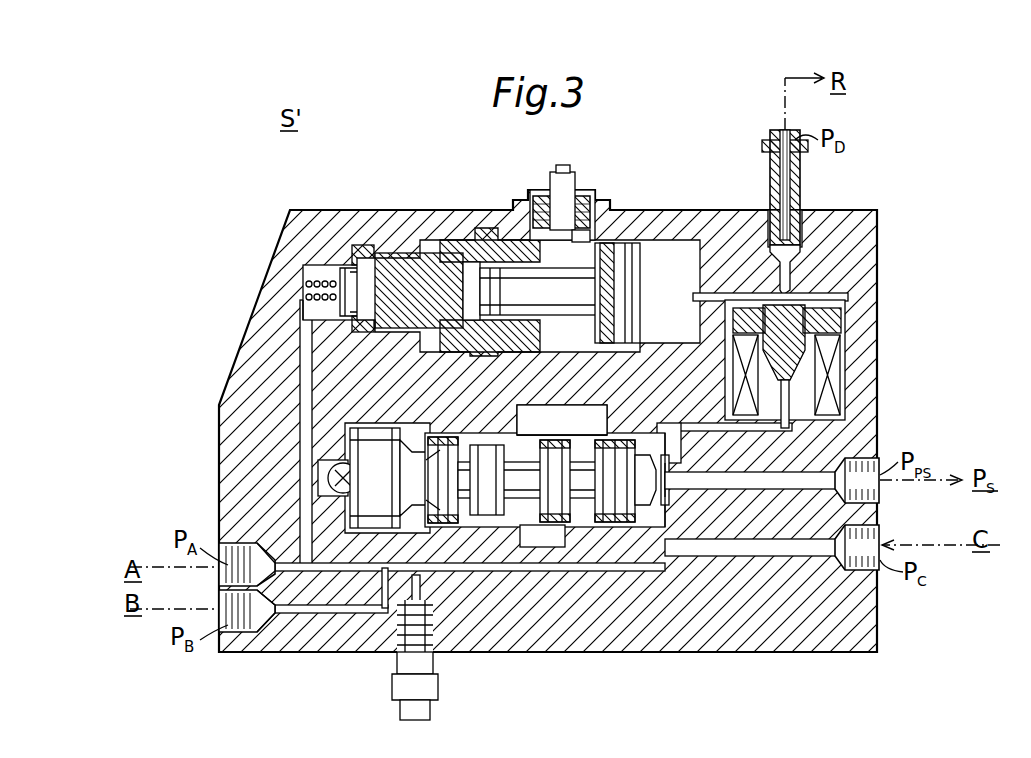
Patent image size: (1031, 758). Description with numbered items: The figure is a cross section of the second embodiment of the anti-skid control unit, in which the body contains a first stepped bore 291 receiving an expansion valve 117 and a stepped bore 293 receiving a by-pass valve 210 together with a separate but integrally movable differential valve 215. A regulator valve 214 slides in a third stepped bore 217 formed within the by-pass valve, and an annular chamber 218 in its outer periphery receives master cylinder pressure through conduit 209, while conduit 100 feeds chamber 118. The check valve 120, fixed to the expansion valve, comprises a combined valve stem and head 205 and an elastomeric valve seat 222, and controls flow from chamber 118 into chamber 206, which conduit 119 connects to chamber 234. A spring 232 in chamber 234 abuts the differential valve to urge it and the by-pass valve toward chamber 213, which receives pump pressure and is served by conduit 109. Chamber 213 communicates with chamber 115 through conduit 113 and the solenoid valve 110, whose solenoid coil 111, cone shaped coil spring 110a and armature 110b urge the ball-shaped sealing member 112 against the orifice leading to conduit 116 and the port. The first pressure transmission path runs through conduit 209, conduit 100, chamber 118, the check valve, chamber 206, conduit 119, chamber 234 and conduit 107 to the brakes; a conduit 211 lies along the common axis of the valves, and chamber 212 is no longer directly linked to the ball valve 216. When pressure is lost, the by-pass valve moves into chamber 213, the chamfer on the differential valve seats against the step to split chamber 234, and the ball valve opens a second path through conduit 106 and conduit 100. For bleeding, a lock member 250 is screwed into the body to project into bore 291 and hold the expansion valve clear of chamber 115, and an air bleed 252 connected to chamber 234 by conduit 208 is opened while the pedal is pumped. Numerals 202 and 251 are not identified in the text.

The conduit 100 is at (345, 352).
The conduit 106 is at (355, 478).
The conduit 107 is at (325, 612).
The conduit 109 is at (800, 478).
The solenoid valve 110 is at (800, 354).
The cone shaped coil spring 110a is at (835, 300).
The armature 110b is at (845, 315).
The solenoid coil 111 is at (835, 375).
The sealing member 112 is at (792, 280).
The conduit 113 is at (775, 427).
The chamber 115 is at (663, 245).
The conduit 116 is at (778, 265).
The expansion valve 117 is at (509, 215).
The chamber 118 is at (305, 306).
The conduit 119 is at (300, 375).
The check valve 120 is at (297, 235).
The regulator valve port 202 is at (680, 490).
The combined valve stem and head 205 is at (345, 272).
The chamber 206 is at (362, 247).
The conduit 208 is at (440, 527).
The conduit 209 is at (487, 515).
The by-pass valve 210 is at (557, 557).
The conduit 211 is at (553, 522).
The chamber 212 is at (615, 522).
The chamber 213 is at (665, 520).
The regulator valve 214 is at (746, 592).
The differential valve 215 is at (217, 445).
The ball valve 216 is at (330, 487).
The third stepped bore 217 is at (645, 505).
The annular chamber 218 is at (455, 440).
The valve seat 222 is at (308, 285).
The spring 232 is at (352, 430).
The chamber 234 is at (430, 440).
The lock member 250 is at (550, 178).
The fitting stem 251 is at (582, 180).
The air bleed 252 is at (425, 688).
The stepped bore 291 is at (580, 244).
The stepped bore 293 is at (582, 389).